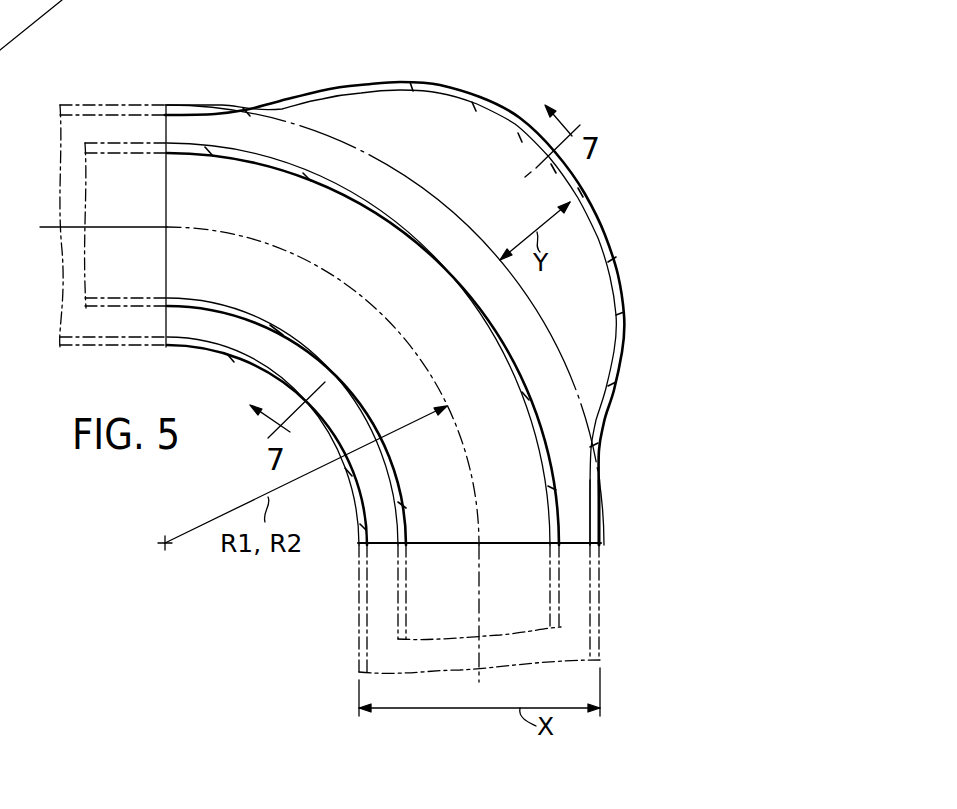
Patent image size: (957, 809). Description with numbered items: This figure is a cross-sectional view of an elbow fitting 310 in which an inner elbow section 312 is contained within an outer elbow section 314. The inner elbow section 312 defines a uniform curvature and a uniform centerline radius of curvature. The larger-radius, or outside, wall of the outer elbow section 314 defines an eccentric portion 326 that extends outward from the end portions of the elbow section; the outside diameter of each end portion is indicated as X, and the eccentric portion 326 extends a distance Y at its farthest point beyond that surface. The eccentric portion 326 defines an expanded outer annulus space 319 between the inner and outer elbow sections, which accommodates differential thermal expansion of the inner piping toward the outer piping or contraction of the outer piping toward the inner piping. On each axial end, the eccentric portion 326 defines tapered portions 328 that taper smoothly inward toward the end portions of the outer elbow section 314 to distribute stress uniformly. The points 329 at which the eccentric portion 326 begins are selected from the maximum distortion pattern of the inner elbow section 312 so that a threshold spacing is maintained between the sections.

The elbow fitting 310 is at (452, 66).
The inner elbow section 312 is at (521, 354).
The outer elbow section 314 is at (599, 515).
The expanded outer annulus space 319 is at (473, 160).
The eccentric portion 326 is at (576, 182).
The tapered portions 328 is at (611, 418).
The points at which the eccentric portion begins 329 is at (600, 470).